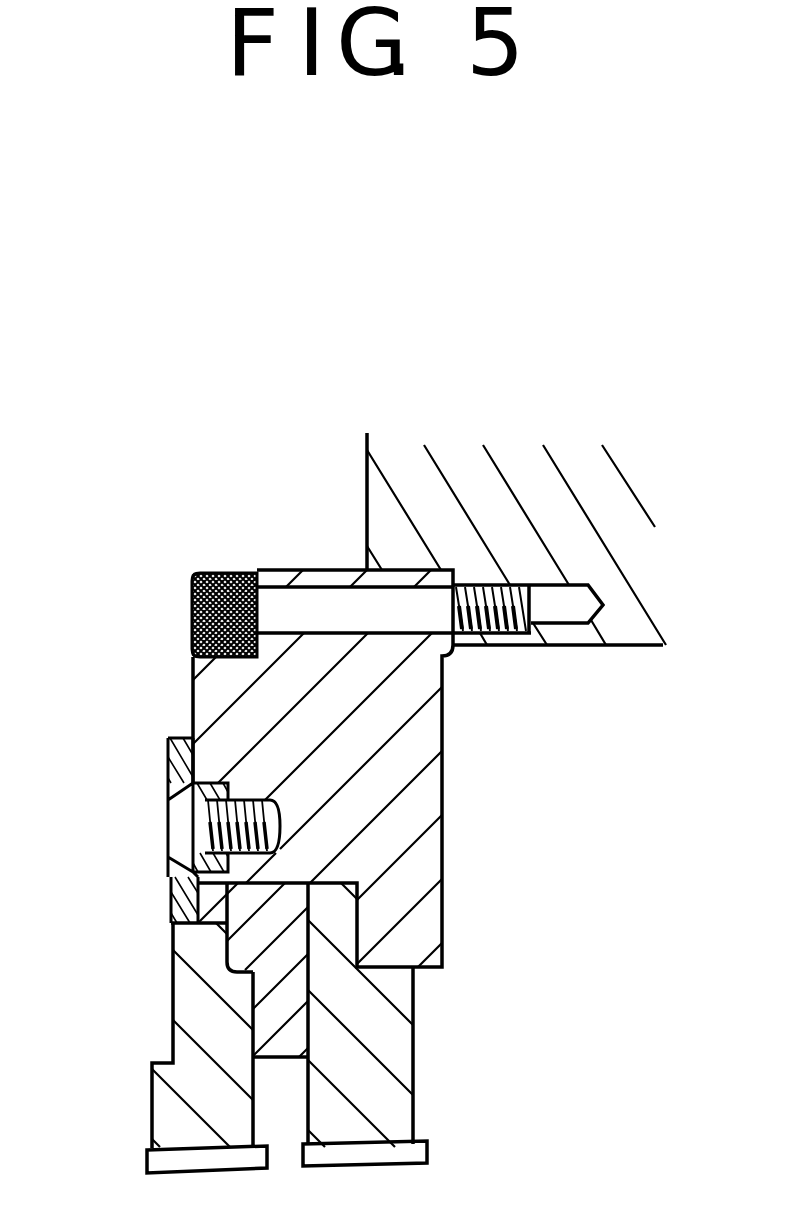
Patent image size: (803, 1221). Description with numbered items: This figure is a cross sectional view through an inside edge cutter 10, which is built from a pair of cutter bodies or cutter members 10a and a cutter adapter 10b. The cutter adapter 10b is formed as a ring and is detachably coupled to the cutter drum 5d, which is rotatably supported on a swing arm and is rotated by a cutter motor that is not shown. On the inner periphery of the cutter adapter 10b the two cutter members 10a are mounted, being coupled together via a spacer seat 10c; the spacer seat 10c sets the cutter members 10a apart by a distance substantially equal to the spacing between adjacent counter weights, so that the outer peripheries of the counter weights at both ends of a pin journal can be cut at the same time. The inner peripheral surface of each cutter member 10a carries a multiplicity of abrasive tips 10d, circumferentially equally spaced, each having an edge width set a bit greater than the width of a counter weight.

The cutter drum 5d is at (397, 489).
The inside edge cutter 10 is at (152, 972).
The cutter members 10a is at (187, 1020).
The cutter adapter 10b is at (408, 727).
The spacer seat 10c is at (250, 943).
The abrasive tips 10d is at (148, 1157).